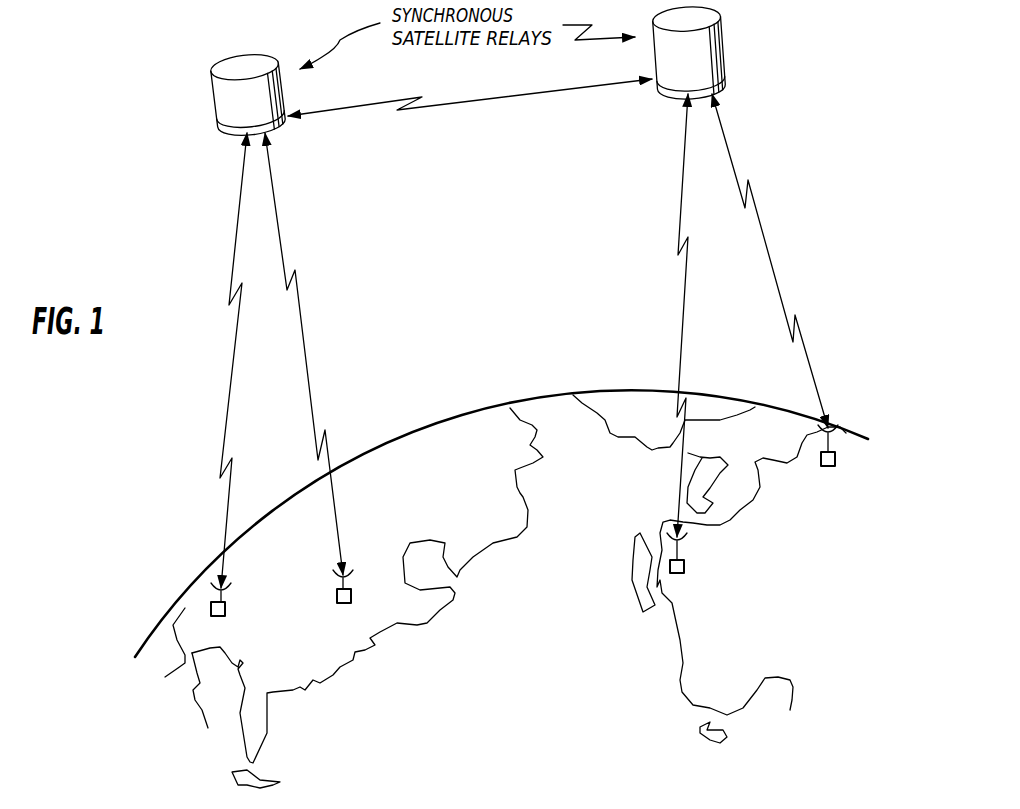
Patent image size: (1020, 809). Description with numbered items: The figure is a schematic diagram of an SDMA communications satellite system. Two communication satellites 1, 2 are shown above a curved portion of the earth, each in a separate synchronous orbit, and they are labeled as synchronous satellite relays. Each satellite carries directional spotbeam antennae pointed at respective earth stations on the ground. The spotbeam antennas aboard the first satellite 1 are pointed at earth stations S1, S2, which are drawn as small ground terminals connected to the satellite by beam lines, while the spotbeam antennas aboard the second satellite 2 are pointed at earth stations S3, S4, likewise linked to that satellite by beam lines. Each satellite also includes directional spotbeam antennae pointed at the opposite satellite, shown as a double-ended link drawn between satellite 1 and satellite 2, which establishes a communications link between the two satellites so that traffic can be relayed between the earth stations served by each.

The communication satellite 1 is at (213, 72).
The communication satellite 2 is at (656, 22).
The earth station S1 is at (225, 612).
The earth station S2 is at (338, 600).
The earth station S3 is at (684, 572).
The earth station S4 is at (830, 468).